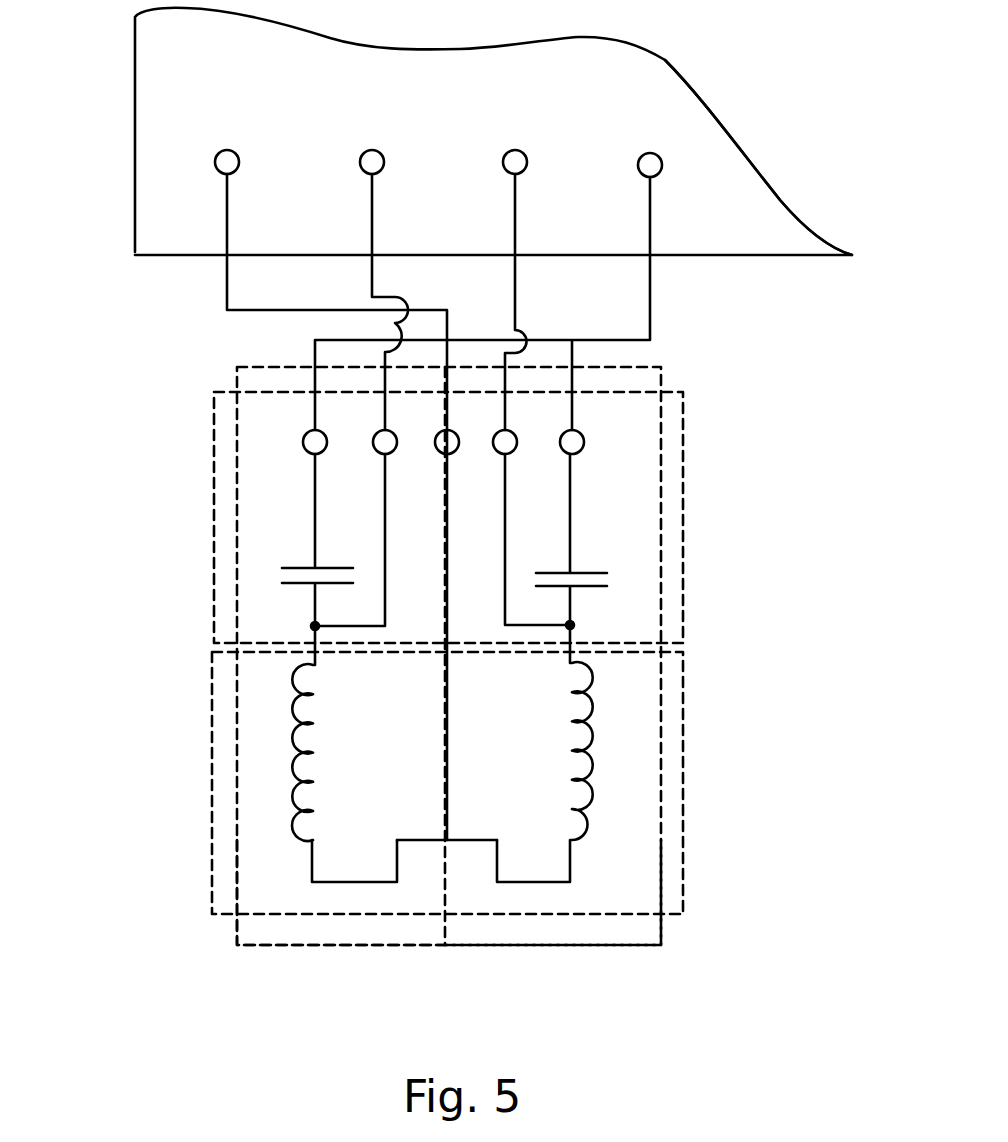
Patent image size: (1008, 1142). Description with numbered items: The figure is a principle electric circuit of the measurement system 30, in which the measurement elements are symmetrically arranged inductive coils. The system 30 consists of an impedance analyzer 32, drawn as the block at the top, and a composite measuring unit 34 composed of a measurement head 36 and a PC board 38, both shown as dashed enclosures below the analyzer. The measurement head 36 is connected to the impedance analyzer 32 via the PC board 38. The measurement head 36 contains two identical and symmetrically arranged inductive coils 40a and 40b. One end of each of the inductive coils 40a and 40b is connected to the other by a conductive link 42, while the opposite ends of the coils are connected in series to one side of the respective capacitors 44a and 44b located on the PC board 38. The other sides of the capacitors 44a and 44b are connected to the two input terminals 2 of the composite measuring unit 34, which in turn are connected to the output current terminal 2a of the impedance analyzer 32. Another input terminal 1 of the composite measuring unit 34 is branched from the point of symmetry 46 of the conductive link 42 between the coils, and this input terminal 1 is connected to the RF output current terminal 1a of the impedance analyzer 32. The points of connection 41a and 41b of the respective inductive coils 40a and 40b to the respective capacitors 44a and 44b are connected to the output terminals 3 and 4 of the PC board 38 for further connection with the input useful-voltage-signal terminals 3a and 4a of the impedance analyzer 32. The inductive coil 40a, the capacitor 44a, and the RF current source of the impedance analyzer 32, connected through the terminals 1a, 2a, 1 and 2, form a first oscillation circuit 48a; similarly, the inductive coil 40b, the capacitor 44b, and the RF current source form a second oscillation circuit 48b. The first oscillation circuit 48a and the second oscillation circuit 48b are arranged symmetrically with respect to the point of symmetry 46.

The measurement system 30 is at (88, 214).
The impedance analyzer 32 is at (803, 218).
The RF output current terminal 1a is at (326, 265).
The input useful-voltage-signal terminal 3a is at (379, 265).
The input useful-voltage-signal terminal 4a is at (515, 265).
The output current terminal 2a is at (493, 265).
The input terminal 1 is at (445, 456).
The input terminals 2 is at (315, 430).
The output terminal 3 is at (385, 430).
The output terminal 4 is at (512, 432).
The composite measuring unit 34 is at (790, 583).
The measurement head 36 is at (212, 842).
The PC board 38 is at (208, 565).
The inductive coil 40a is at (300, 748).
The inductive coil 40b is at (587, 747).
The point of connection 41a is at (313, 626).
The point of connection 41b is at (577, 623).
The conductive link 42 is at (395, 843).
The capacitor 44a is at (289, 565).
The capacitor 44b is at (583, 568).
The point of symmetry 46 is at (447, 842).
The first oscillation circuit 48a is at (220, 937).
The second oscillation circuit 48b is at (673, 936).